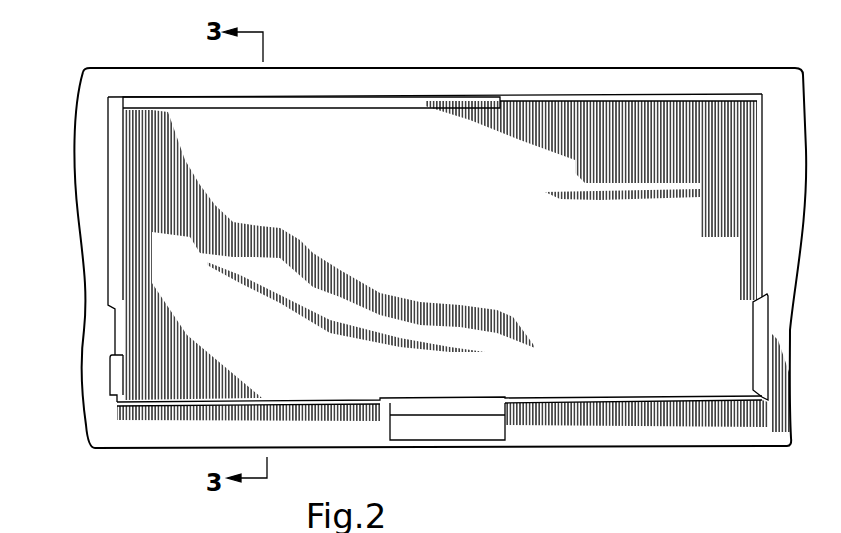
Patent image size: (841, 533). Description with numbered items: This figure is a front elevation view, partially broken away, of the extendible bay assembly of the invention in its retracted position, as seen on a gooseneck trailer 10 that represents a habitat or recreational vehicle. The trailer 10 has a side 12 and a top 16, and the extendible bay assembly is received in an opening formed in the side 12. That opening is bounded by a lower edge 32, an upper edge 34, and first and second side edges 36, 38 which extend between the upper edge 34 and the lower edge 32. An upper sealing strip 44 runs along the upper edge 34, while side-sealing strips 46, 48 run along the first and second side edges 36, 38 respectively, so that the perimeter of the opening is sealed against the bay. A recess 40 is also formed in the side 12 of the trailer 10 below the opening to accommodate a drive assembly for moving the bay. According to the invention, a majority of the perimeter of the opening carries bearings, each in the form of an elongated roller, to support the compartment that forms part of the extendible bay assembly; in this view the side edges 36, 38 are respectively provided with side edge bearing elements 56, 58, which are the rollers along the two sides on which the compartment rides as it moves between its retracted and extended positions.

The gooseneck trailer 10 is at (439, 246).
The side 12 is at (145, 437).
The top 16 is at (662, 45).
The lower edge 32 is at (552, 397).
The upper edge 34 is at (542, 100).
The first side edge 36 is at (147, 324).
The second side edge 38 is at (762, 232).
The recess 40 is at (479, 433).
The upper sealing strip 44 is at (293, 107).
The side-sealing strip 46 is at (112, 155).
The side-sealing strip 48 is at (753, 345).
The side edge bearing element 56 is at (112, 328).
The side edge bearing element 58 is at (758, 197).